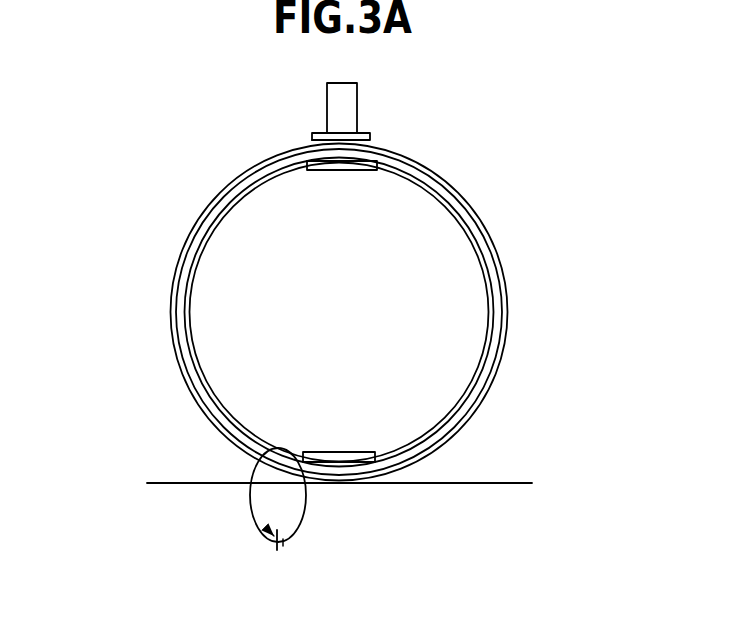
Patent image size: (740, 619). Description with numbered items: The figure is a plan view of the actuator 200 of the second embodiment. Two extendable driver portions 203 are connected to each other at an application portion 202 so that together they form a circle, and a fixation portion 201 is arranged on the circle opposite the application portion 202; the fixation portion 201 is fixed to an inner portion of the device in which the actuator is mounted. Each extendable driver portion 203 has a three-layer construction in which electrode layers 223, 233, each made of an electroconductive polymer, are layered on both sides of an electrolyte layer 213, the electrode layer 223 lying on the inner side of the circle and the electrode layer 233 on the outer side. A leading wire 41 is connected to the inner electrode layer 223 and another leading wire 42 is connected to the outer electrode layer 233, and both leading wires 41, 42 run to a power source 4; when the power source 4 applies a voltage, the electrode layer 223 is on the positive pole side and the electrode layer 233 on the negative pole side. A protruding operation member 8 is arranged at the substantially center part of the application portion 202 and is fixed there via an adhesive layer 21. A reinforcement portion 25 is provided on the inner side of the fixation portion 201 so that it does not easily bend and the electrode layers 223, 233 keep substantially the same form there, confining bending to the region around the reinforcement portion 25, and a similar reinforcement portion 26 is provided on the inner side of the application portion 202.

The actuator 200 is at (341, 264).
The fixation portion 201 is at (349, 486).
The application portion 202 is at (368, 128).
The extendable driver portions 203 is at (341, 312).
The electrolyte layer 213 is at (181, 322).
The electrode layer 223 is at (190, 341).
The electrode layer 233 is at (173, 352).
The operation member 8 is at (347, 94).
The adhesive layer 21 is at (316, 134).
The reinforcement portion 25 is at (342, 452).
The reinforcement portion 26 is at (343, 171).
The power source 4 is at (285, 550).
The leading wire 41 is at (250, 513).
The leading wire 42 is at (305, 521).